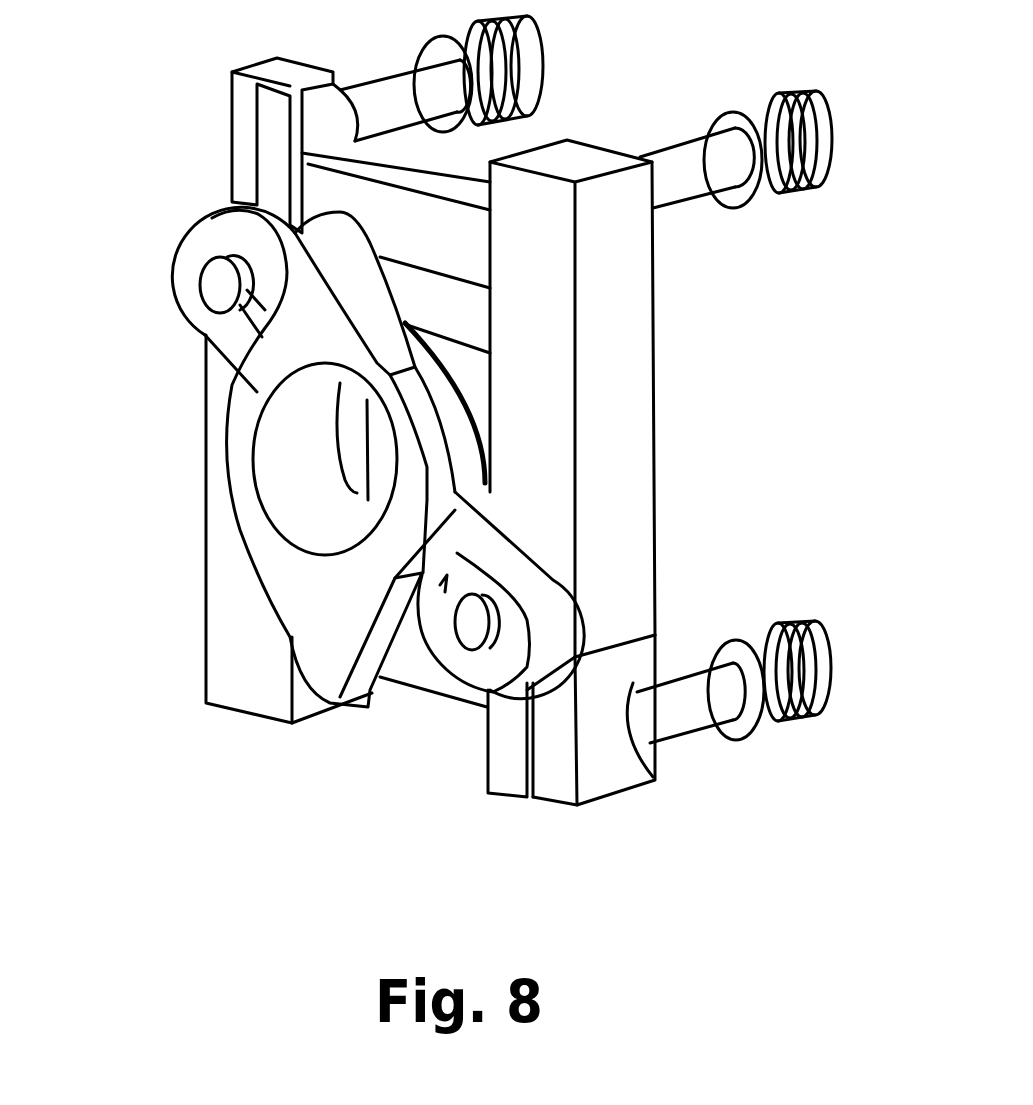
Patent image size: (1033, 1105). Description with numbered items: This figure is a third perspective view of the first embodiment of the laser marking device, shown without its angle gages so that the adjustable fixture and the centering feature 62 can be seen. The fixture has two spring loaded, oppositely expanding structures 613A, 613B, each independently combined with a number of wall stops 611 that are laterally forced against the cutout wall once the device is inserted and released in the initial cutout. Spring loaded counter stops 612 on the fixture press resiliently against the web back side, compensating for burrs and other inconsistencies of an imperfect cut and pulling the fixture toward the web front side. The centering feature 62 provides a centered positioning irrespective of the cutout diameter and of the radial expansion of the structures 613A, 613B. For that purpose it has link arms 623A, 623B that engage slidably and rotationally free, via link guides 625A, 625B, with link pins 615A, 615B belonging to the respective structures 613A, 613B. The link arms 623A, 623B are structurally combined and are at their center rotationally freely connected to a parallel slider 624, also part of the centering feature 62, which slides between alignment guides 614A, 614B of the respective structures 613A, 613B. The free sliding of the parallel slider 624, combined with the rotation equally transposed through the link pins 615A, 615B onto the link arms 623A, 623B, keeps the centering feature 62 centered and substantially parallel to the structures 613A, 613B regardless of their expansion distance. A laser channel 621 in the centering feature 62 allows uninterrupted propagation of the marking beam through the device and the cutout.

The centering feature 62 is at (297, 594).
The wall stop 611 is at (677, 167).
The spring loaded counter stop 612 is at (773, 190).
The spring loaded expanding structure 613A is at (604, 767).
The spring loaded expanding structure 613B is at (632, 477).
The alignment guide 614A is at (258, 160).
The alignment guide 614B is at (503, 750).
The link pin 615A is at (215, 290).
The link pin 615B is at (473, 625).
The laser channel 621 is at (270, 507).
The link arm 623A is at (190, 243).
The link arm 623B is at (532, 582).
The parallel slider 624 is at (467, 363).
The link guide 625A is at (248, 324).
The link guide 625B is at (445, 580).